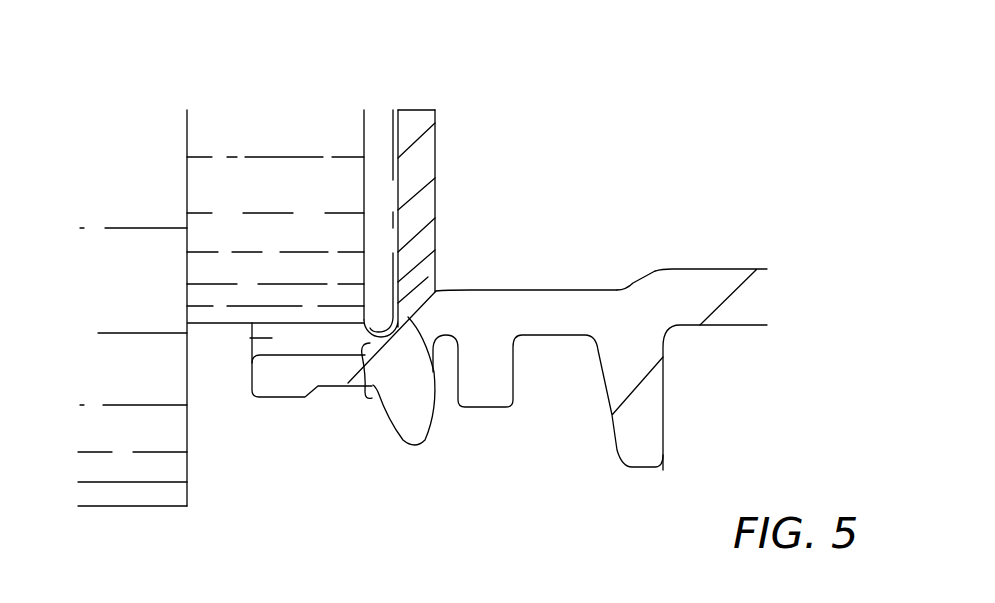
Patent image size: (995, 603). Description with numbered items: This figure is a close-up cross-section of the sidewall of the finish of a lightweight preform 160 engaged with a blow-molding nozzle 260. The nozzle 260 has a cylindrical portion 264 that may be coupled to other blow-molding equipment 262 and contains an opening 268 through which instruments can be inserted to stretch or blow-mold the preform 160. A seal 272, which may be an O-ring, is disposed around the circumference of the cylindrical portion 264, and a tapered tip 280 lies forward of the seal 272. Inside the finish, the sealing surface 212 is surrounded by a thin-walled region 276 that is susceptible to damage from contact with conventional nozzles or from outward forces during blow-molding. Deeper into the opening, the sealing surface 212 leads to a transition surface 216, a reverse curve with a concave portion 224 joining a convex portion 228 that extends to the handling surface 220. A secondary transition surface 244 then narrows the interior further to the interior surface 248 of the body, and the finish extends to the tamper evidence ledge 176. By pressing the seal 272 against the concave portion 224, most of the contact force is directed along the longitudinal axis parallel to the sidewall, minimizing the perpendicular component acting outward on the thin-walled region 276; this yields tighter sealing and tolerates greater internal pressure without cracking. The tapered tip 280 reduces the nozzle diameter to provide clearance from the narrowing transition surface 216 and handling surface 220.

The preform 160 is at (717, 325).
The tamper evidence ledge 176 is at (645, 467).
The sealing surface 212 is at (250, 338).
The transition surface 216 is at (434, 372).
The handling surface 220 is at (562, 276).
The concave portion 224 is at (365, 399).
The convex portion 228 is at (437, 291).
The secondary transition surface 244 is at (633, 285).
The interior surface 248 is at (744, 246).
The nozzle 260 is at (236, 104).
The blow-molding equipment 262 is at (128, 506).
The cylindrical portion 264 is at (294, 196).
The opening 268 is at (444, 188).
The seal 272 is at (381, 125).
The thin-walled region 276 is at (288, 377).
The tapered tip 280 is at (415, 117).